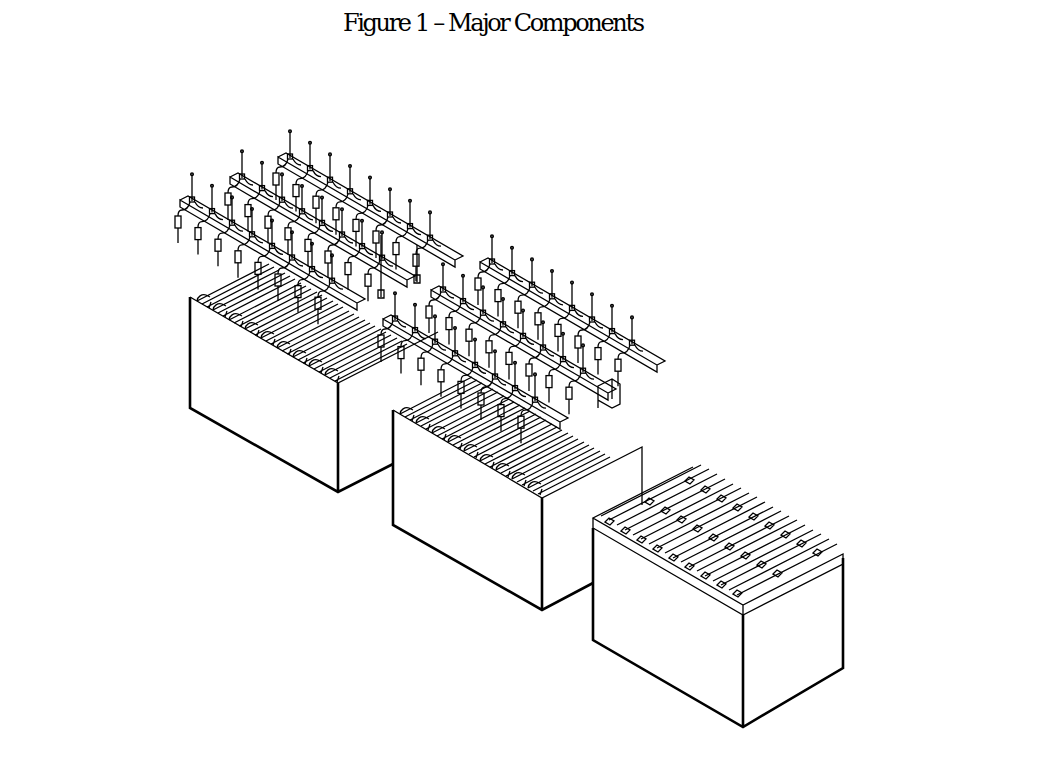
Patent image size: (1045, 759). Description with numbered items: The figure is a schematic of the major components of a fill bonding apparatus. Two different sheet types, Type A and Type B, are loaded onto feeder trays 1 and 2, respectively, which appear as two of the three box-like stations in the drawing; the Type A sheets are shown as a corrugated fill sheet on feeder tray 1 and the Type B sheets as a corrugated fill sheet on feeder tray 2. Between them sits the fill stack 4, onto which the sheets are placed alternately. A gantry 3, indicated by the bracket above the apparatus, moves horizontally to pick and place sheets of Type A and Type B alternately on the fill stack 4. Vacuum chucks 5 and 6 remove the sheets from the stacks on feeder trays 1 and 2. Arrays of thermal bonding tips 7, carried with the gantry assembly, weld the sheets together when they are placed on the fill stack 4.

The feeder tray 1 is at (258, 420).
The feeder tray 2 is at (660, 640).
The gantry 3 is at (703, 318).
The fill stack 4 is at (460, 525).
The vacuum chuck 5 is at (417, 278).
The vacuum chuck 6 is at (605, 418).
The arrays of thermal bonding tips 7 is at (593, 302).